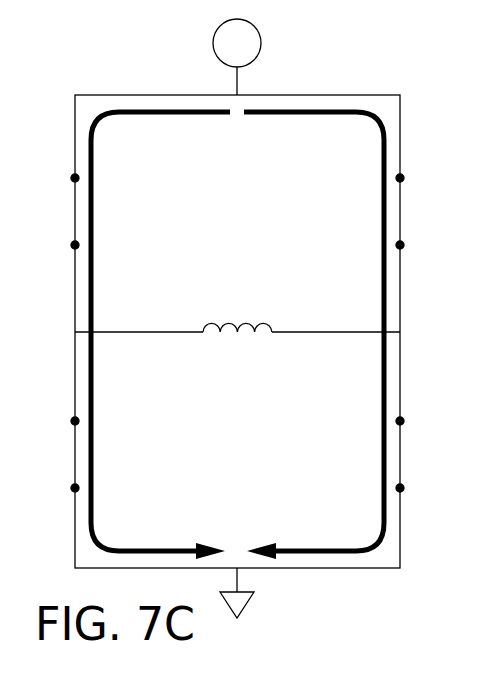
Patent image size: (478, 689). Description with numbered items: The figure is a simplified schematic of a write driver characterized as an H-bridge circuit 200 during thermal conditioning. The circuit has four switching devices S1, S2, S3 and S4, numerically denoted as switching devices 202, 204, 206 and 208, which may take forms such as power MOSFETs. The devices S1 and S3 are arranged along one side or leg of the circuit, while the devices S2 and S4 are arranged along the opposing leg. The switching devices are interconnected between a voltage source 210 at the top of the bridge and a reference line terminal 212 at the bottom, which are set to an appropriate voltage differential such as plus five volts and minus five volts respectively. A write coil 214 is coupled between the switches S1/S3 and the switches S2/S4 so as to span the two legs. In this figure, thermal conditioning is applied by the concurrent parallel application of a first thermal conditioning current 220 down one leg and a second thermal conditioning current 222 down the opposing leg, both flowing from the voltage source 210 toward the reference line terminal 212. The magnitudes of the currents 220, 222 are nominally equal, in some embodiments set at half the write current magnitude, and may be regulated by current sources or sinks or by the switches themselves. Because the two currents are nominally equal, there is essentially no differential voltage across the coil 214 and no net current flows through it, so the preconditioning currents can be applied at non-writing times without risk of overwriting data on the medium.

The H-bridge circuit 200 is at (166, 58).
The switching device 202 is at (74, 212).
The switching device 204 is at (401, 212).
The switching device 206 is at (74, 455).
The switching device 208 is at (401, 455).
The voltage source 210 is at (261, 47).
The reference line terminal 212 is at (246, 612).
The write coil 214 is at (243, 330).
The first thermal conditioning current 220 is at (93, 272).
The second thermal conditioning current 222 is at (383, 280).
The switching device S1 is at (54, 245).
The switching device S2 is at (415, 245).
The switching device S3 is at (58, 497).
The switching device S4 is at (414, 497).